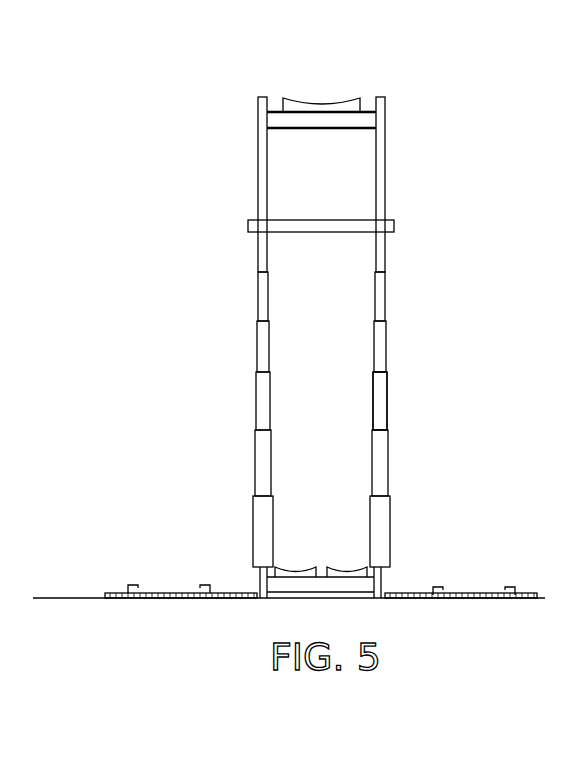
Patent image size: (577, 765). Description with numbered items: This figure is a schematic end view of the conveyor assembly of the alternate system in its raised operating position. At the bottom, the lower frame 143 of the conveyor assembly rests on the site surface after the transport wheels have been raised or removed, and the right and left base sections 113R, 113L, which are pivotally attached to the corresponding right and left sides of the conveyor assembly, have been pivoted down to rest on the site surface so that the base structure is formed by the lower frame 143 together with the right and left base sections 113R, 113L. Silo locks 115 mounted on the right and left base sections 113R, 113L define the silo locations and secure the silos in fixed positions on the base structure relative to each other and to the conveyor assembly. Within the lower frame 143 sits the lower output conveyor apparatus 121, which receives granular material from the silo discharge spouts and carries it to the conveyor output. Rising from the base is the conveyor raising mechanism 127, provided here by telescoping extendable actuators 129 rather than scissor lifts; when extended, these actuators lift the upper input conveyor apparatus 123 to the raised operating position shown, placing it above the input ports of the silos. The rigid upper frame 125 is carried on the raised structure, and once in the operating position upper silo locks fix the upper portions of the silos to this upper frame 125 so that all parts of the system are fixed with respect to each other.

The right base section 113R is at (113, 592).
The left base section 113L is at (497, 595).
The silo lock 115 is at (131, 592).
The lower output conveyor apparatus 121 is at (338, 566).
The upper input conveyor apparatus 123 is at (369, 96).
The rigid upper frame 125 is at (395, 220).
The conveyor raising mechanism 127 is at (404, 304).
The telescoping extendable actuator 129 is at (387, 407).
The lower frame 143 is at (366, 593).